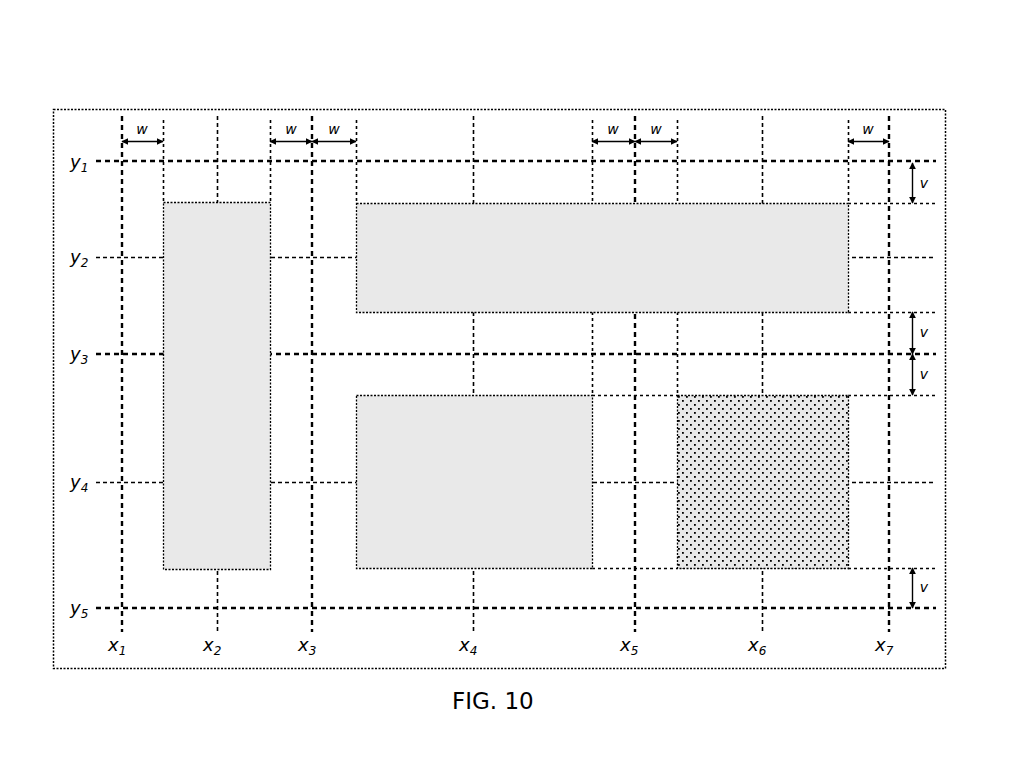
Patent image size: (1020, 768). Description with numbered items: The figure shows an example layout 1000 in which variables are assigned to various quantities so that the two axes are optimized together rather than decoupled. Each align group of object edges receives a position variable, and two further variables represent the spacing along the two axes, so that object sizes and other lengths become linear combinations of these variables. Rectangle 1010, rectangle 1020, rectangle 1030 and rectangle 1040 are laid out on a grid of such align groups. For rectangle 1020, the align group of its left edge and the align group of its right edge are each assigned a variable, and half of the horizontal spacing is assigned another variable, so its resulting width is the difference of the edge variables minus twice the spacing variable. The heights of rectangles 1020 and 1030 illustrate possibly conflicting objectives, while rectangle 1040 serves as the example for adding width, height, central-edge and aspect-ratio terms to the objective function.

The layout grid diagram 1000 is at (125, 62).
The first rectangular region 1010 is at (217, 386).
The rectangle 1020 is at (475, 482).
The rectangle 1030 is at (763, 482).
The rectangle 1040 is at (603, 258).